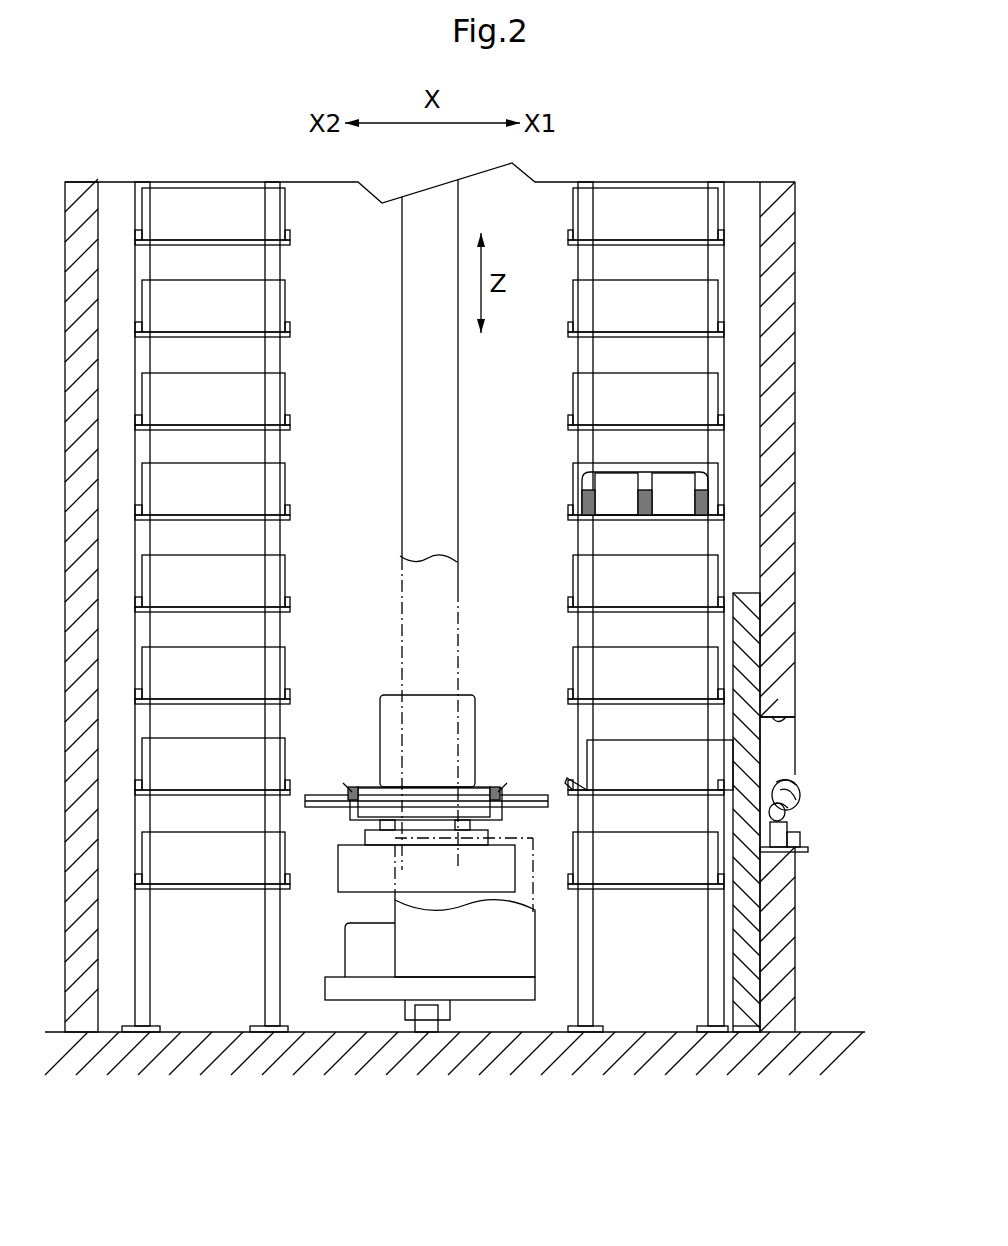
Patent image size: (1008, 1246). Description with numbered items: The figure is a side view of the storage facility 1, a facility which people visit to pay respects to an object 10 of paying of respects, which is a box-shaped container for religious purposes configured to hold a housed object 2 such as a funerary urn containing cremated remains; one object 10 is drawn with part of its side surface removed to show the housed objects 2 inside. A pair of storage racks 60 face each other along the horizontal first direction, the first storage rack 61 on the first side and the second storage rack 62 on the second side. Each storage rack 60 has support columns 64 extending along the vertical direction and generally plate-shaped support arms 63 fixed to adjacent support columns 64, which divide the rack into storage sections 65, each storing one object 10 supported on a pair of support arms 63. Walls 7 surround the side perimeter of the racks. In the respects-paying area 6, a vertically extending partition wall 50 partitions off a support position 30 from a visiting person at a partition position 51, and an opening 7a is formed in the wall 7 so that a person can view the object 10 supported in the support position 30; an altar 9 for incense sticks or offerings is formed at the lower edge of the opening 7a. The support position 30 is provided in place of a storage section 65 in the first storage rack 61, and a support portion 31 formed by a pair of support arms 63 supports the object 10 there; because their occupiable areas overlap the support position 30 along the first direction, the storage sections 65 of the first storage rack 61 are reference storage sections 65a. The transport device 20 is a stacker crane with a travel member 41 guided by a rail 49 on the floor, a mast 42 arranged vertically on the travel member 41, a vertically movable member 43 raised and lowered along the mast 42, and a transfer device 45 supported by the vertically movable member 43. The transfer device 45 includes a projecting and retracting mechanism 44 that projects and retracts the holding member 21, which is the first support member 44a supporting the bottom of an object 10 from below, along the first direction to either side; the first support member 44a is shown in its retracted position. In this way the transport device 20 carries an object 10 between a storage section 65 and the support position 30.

The storage facility 1 is at (824, 182).
The housed object 2 is at (672, 495).
The respects-paying area 6 is at (826, 745).
The wall 7 is at (800, 318).
The opening 7a is at (778, 718).
The altar 9 is at (810, 852).
The object of paying of respects 10 is at (273, 583).
The transport device 20 is at (363, 738).
The holding member 21 is at (445, 690).
The support position 30 is at (606, 762).
The support portion 31 is at (645, 795).
The travel member 41 is at (332, 990).
The mast 42 is at (412, 375).
The vertically movable member 43 is at (352, 883).
The projecting and retracting mechanism 44 is at (483, 792).
The first support member 44a is at (435, 780).
The transfer device 45 is at (426, 755).
The rail 49 is at (430, 1023).
The partition wall 50 is at (755, 598).
The partition position 51 is at (738, 1036).
The storage rack 60 is at (438, 568).
The first storage rack 61 is at (653, 172).
The second storage rack 62 is at (217, 172).
The support arm 63 is at (222, 513).
The support column 64 is at (270, 920).
The storage section 65 is at (270, 212).
The reference storage section 65a is at (588, 668).